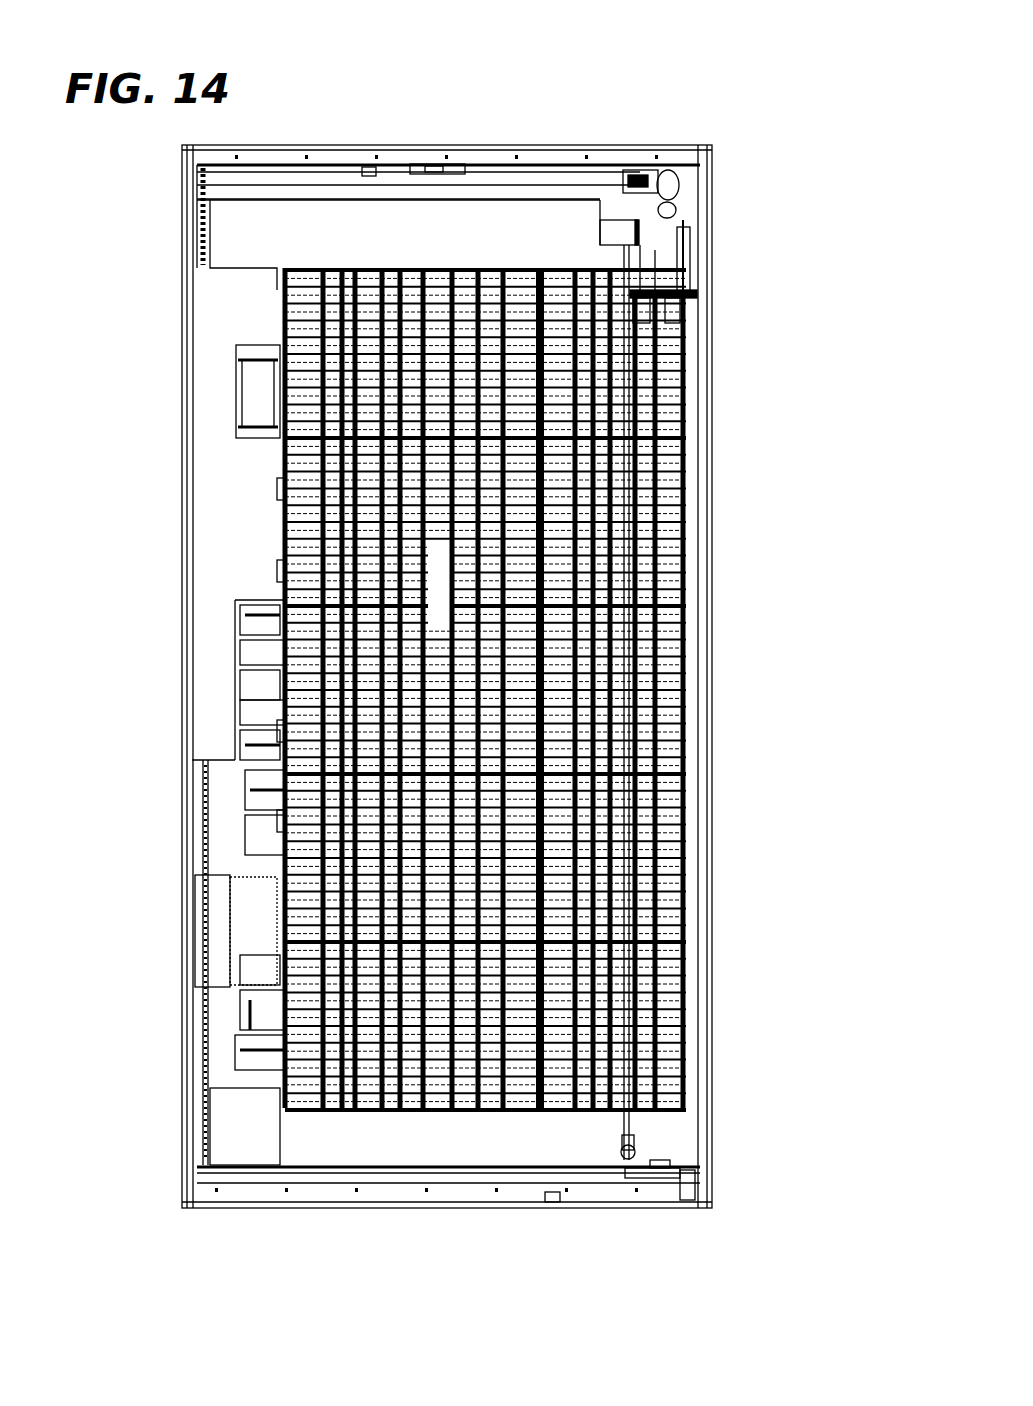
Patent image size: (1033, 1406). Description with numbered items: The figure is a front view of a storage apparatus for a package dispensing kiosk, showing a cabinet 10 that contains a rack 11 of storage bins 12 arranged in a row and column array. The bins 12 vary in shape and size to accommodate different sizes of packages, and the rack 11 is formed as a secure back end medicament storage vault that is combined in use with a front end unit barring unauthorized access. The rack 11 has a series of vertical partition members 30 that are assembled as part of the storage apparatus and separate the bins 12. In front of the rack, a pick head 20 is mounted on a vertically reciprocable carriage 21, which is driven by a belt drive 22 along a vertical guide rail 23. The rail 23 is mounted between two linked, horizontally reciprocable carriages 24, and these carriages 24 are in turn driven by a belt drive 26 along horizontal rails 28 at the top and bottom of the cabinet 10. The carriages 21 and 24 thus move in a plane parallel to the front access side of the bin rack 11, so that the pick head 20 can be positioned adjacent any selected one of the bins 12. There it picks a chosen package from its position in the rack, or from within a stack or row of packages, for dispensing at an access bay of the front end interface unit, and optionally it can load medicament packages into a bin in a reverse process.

The cabinet 10 is at (140, 818).
The rack 11 is at (466, 595).
The storage bins 12 is at (310, 795).
The pick head 20 is at (697, 296).
The vertically reciprocable carriage 21 is at (690, 260).
The belt drive 22 is at (614, 220).
The vertical guide rail 23 is at (636, 332).
The horizontally reciprocable carriages 24 is at (635, 170).
The belt drive 26 is at (410, 164).
The horizontal rails 28 is at (366, 165).
The vertical partition members 30 is at (690, 598).